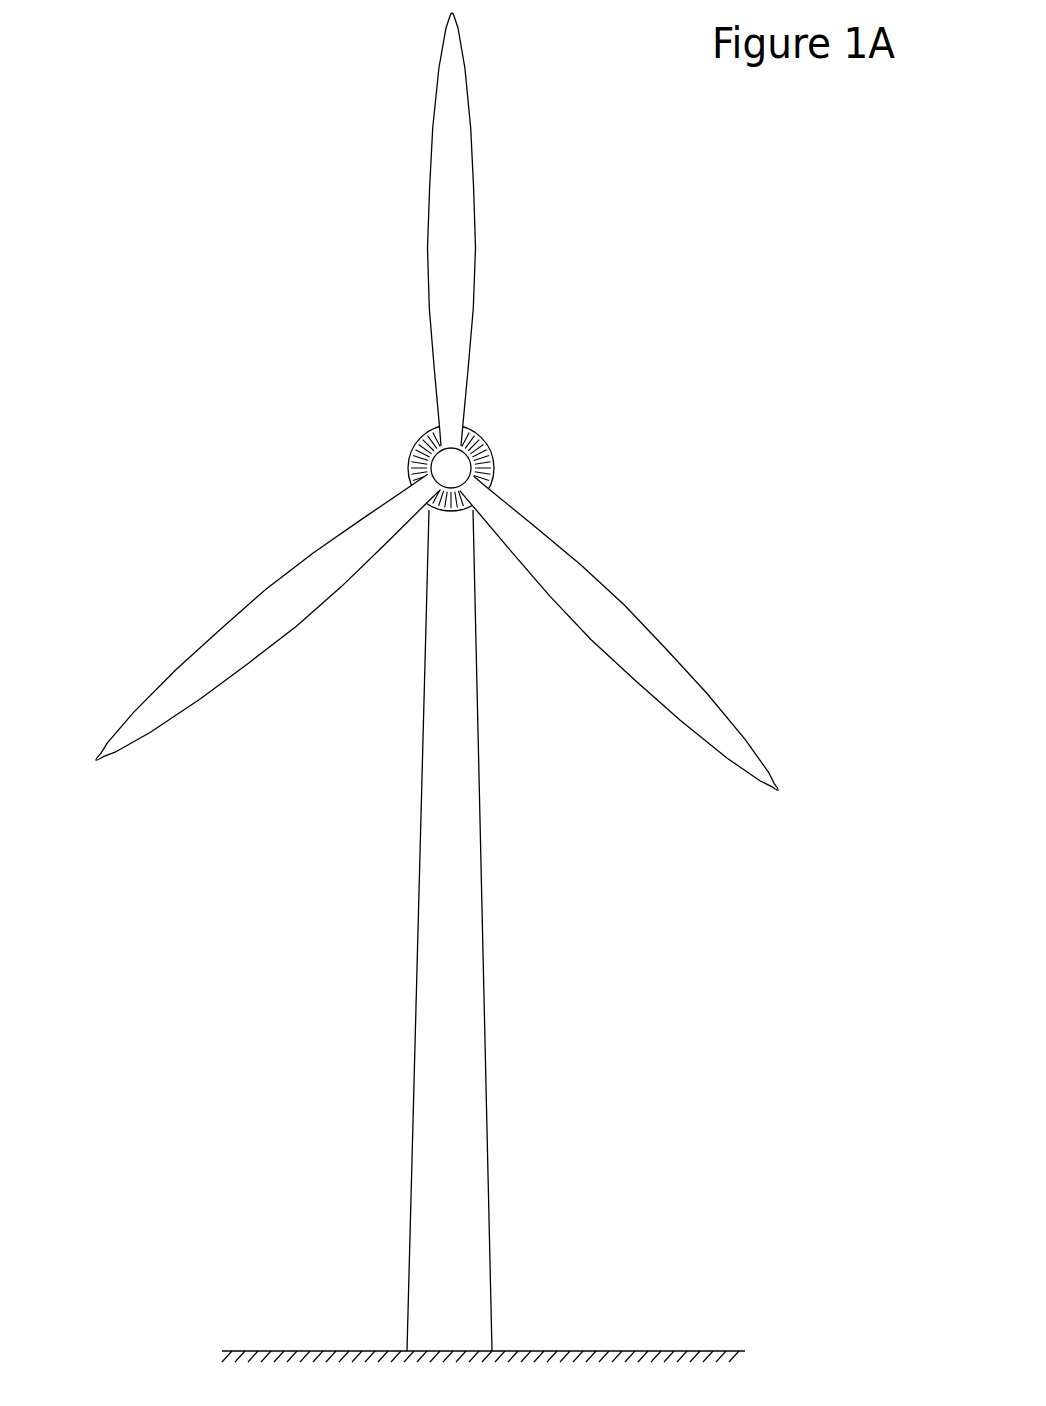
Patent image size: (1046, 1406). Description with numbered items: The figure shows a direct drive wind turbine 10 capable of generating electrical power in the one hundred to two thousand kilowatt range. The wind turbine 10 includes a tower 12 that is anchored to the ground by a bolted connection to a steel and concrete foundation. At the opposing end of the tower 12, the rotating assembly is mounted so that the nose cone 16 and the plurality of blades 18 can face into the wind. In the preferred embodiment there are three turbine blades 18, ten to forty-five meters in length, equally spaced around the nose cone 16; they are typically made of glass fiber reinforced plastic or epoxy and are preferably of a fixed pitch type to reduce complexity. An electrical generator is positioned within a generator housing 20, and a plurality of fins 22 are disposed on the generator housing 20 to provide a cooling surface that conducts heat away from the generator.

The wind turbine 10 is at (129, 149).
The tower 12 is at (414, 1050).
The nose cone 16 is at (492, 480).
The blades 18 is at (163, 680).
The generator housing 20 is at (485, 442).
The fins 22 is at (413, 448).